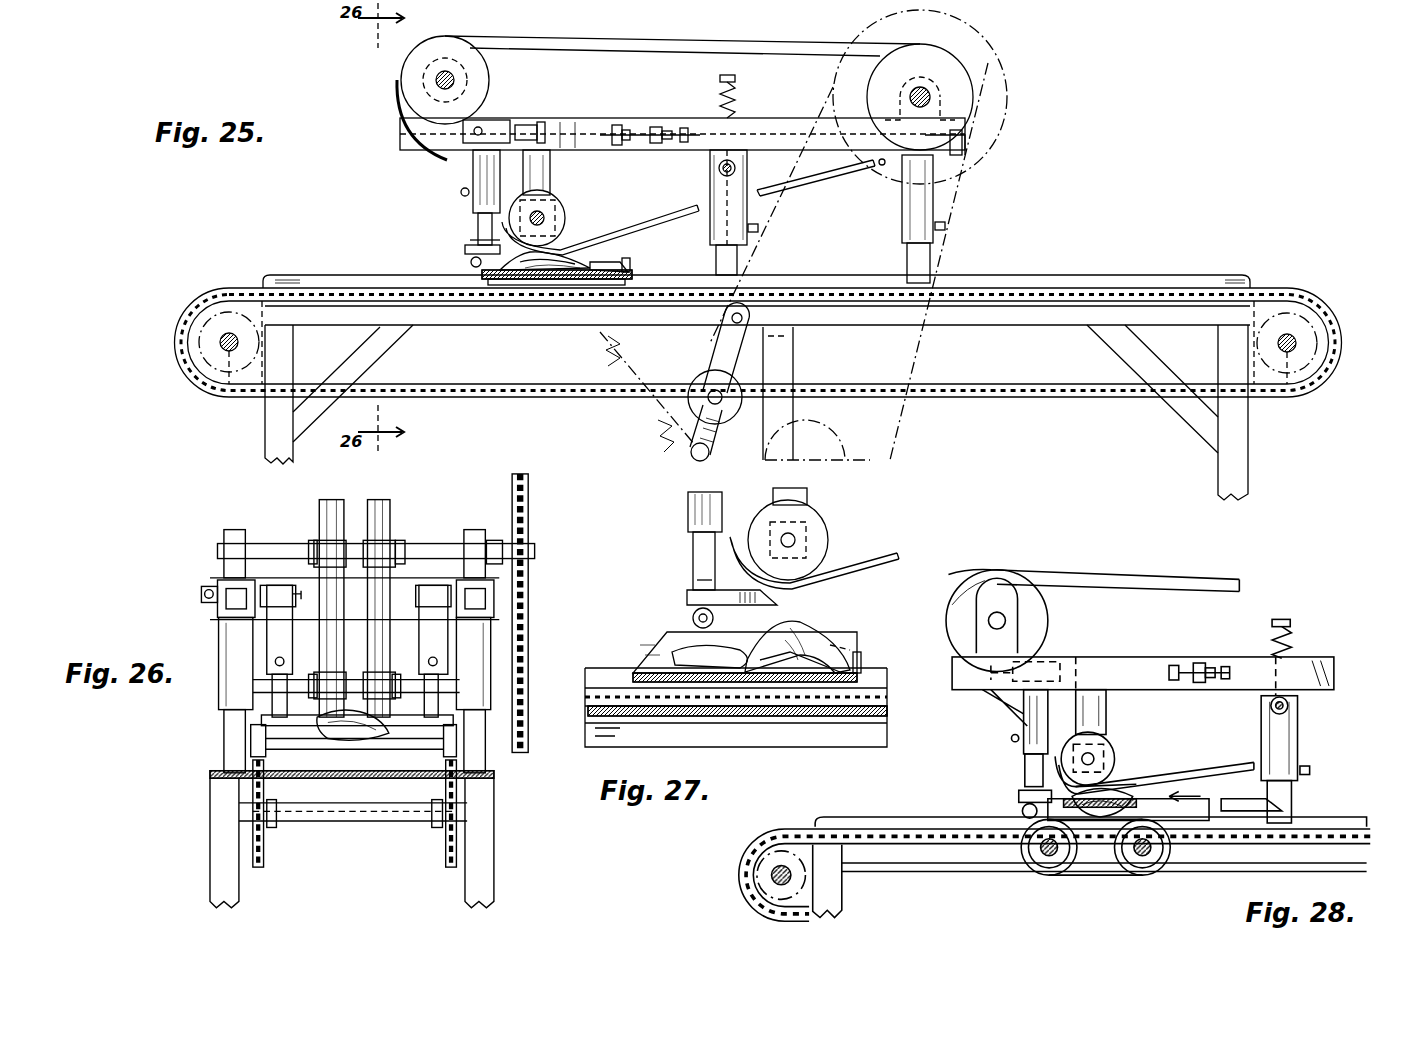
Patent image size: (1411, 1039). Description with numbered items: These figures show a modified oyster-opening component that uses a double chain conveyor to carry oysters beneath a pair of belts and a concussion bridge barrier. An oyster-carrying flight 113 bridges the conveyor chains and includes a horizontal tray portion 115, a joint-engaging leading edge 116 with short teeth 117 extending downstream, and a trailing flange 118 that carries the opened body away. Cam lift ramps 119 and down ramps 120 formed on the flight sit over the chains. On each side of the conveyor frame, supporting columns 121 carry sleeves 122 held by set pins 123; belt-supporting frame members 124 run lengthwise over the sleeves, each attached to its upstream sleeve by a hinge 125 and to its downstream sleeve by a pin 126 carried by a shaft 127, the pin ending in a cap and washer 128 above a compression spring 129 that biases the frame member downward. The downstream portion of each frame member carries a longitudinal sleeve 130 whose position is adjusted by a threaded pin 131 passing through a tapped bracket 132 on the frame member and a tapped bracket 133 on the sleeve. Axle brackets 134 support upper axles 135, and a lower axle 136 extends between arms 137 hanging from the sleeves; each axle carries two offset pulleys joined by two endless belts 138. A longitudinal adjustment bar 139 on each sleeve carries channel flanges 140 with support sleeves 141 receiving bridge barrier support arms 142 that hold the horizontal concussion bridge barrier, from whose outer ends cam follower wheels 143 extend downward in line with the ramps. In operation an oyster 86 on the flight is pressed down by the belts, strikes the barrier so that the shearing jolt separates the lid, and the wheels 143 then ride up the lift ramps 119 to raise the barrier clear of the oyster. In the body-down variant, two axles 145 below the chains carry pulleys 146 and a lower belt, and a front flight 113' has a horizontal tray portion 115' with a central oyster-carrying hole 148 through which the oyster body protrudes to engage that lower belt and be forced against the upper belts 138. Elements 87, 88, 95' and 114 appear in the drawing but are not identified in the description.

In FIG. 25, the oyster 86 is at (545, 225).
In FIG. 26, the oyster 86 is at (330, 668).
In FIG. 28, the oyster 86 is at (1103, 751).
In FIG. 27, the shrimp body 87 is at (825, 638).
In FIG. 27, the conveyor chain 88 is at (700, 685).
In FIG. 27, the deflector 95' is at (800, 632).
In FIG. 28, the deflector 95' is at (1033, 768).
In FIG. 25, the oyster-carrying flight 113 is at (550, 315).
In FIG. 27, the oyster-carrying flight 113 is at (718, 652).
In FIG. 28, the front flight 113' is at (1125, 793).
In FIG. 25, the lever arm 114 is at (618, 315).
In FIG. 25, the horizontal tray portion 115 is at (757, 342).
In FIG. 26, the horizontal tray portion 115 is at (353, 802).
In FIG. 27, the horizontal tray portion 115 is at (736, 719).
In FIG. 28, the horizontal tray portion 115' is at (1132, 758).
In FIG. 25, the joint-engaging leading edge 116 is at (580, 262).
In FIG. 26, the joint-engaging leading edge 116 is at (320, 715).
In FIG. 27, the joint-engaging leading edge 116 is at (795, 628).
In FIG. 26, the short teeth 117 is at (330, 716).
In FIG. 25, the trailing flange 118 is at (632, 262).
In FIG. 27, the trailing flange 118 is at (862, 657).
In FIG. 25, the cam lift ramps 119 is at (468, 262).
In FIG. 26, the cam lift ramps 119 is at (430, 712).
In FIG. 27, the cam lift ramps 119 is at (665, 650).
In FIG. 28, the cam lift ramps 119 is at (996, 804).
In FIG. 25, the down ramps 120 is at (620, 262).
In FIG. 27, the down ramps 120 is at (855, 645).
In FIG. 25, the supporting columns 121 is at (740, 260).
In FIG. 28, the supporting columns 121 is at (1306, 802).
In FIG. 25, the sleeves 122 is at (748, 215).
In FIG. 28, the sleeves 122 is at (1298, 738).
In FIG. 25, the set pins 123 is at (760, 228).
In FIG. 28, the set pins 123 is at (1321, 760).
In FIG. 25, the belt-supporting frame members 124 is at (782, 130).
In FIG. 26, the belt-supporting frame members 124 is at (207, 600).
In FIG. 25, the hinge 125 is at (882, 165).
In FIG. 25, the pin 126 is at (715, 150).
In FIG. 28, the pin 126 is at (1254, 666).
In FIG. 25, the shaft 127 is at (718, 172).
In FIG. 28, the shaft 127 is at (1260, 715).
In FIG. 25, the cap and washer 128 is at (736, 78).
In FIG. 28, the cap and washer 128 is at (1257, 616).
In FIG. 25, the compression spring 129 is at (737, 96).
In FIG. 28, the compression spring 129 is at (1306, 643).
In FIG. 25, the longitudinal sleeve 130 is at (580, 120).
In FIG. 26, the longitudinal sleeve 130 is at (215, 572).
In FIG. 28, the longitudinal sleeve 130 is at (1068, 633).
In FIG. 25, the threaded pin 131 is at (650, 122).
In FIG. 28, the threaded pin 131 is at (1209, 651).
In FIG. 25, the tapped bracket 132 is at (660, 150).
In FIG. 28, the tapped bracket 132 is at (1217, 693).
In FIG. 25, the tapped bracket 133 is at (622, 128).
In FIG. 26, the tapped bracket 133 is at (195, 580).
In FIG. 28, the tapped bracket 133 is at (1187, 654).
In FIG. 25, the axle brackets 134 is at (495, 35).
In FIG. 26, the axle brackets 134 is at (220, 525).
In FIG. 25, the upper axles 135 is at (450, 70).
In FIG. 26, the upper axles 135 is at (250, 538).
In FIG. 28, the upper axles 135 is at (955, 605).
In FIG. 25, the lower axle 136 is at (555, 215).
In FIG. 26, the lower axle 136 is at (380, 662).
In FIG. 27, the lower axle 136 is at (795, 540).
In FIG. 25, the arms 137 is at (550, 178).
In FIG. 26, the arms 137 is at (255, 633).
In FIG. 27, the arms 137 is at (808, 495).
In FIG. 28, the arms 137 is at (1112, 712).
In FIG. 25, the endless belts 138 is at (790, 40).
In FIG. 26, the endless belts 138 is at (357, 497).
In FIG. 27, the endless belts 138 is at (898, 552).
In FIG. 28, the endless belts 138 is at (1062, 568).
In FIG. 25, the longitudinal adjustment bar 139 is at (535, 122).
In FIG. 26, the longitudinal adjustment bar 139 is at (252, 585).
In FIG. 28, the longitudinal adjustment bar 139 is at (1005, 640).
In FIG. 25, the channel flanges 140 is at (508, 118).
In FIG. 26, the channel flanges 140 is at (272, 595).
In FIG. 25, the support sleeves 141 is at (478, 170).
In FIG. 26, the support sleeves 141 is at (215, 675).
In FIG. 27, the support sleeves 141 is at (690, 510).
In FIG. 28, the support sleeves 141 is at (970, 678).
In FIG. 25, the bridge barrier support arms 142 is at (482, 215).
In FIG. 26, the bridge barrier support arms 142 is at (215, 720).
In FIG. 27, the bridge barrier support arms 142 is at (695, 542).
In FIG. 28, the bridge barrier support arms 142 is at (972, 715).
In FIG. 25, the cam follower wheels 143 is at (470, 255).
In FIG. 26, the cam follower wheels 143 is at (432, 730).
In FIG. 27, the cam follower wheels 143 is at (695, 612).
In FIG. 28, the cam follower wheels 143 is at (975, 800).
In FIG. 28, the axles 145 is at (1069, 863).
In FIG. 28, the pulleys 146 is at (1111, 867).
In FIG. 28, the oyster-carrying hole 148 is at (1117, 778).